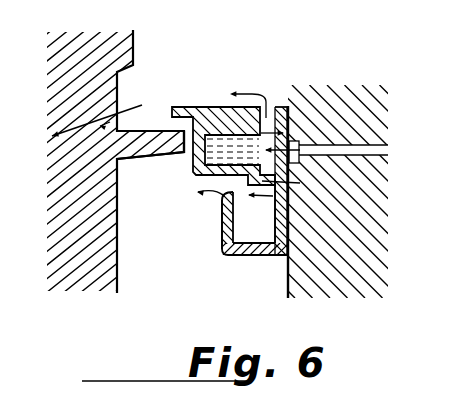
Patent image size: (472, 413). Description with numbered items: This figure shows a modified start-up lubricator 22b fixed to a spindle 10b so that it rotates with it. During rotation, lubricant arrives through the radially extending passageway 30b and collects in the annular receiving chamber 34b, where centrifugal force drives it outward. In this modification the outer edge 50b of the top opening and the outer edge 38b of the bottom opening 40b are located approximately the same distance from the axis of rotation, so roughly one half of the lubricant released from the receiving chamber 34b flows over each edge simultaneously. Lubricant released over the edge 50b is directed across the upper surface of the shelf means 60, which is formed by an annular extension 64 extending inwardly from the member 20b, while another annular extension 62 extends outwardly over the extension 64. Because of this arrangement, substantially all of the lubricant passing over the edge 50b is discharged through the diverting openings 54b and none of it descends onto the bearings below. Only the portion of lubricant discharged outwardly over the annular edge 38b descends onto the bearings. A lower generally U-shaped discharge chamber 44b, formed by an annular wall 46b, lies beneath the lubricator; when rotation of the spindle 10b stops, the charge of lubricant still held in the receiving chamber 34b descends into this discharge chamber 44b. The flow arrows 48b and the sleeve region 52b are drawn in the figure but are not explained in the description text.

The spindle 10b is at (343, 273).
The member 20b is at (115, 45).
The start-up lubricator 22b is at (210, 240).
The radially extending passageway 30b is at (369, 151).
The annular receiving chamber 34b is at (286, 131).
The outer edge of bottom opening 38b is at (271, 197).
The bottom opening 40b is at (300, 183).
The discharge chamber 44b is at (223, 251).
The annular wall 46b is at (257, 256).
The flow path 48b is at (220, 194).
The outer edge of top opening 50b is at (286, 107).
The sleeve 52b is at (278, 126).
The diverting openings 54b is at (68, 137).
The shelf means 60 is at (158, 117).
The annular extension 62 is at (183, 107).
The annular extension 64 is at (155, 142).